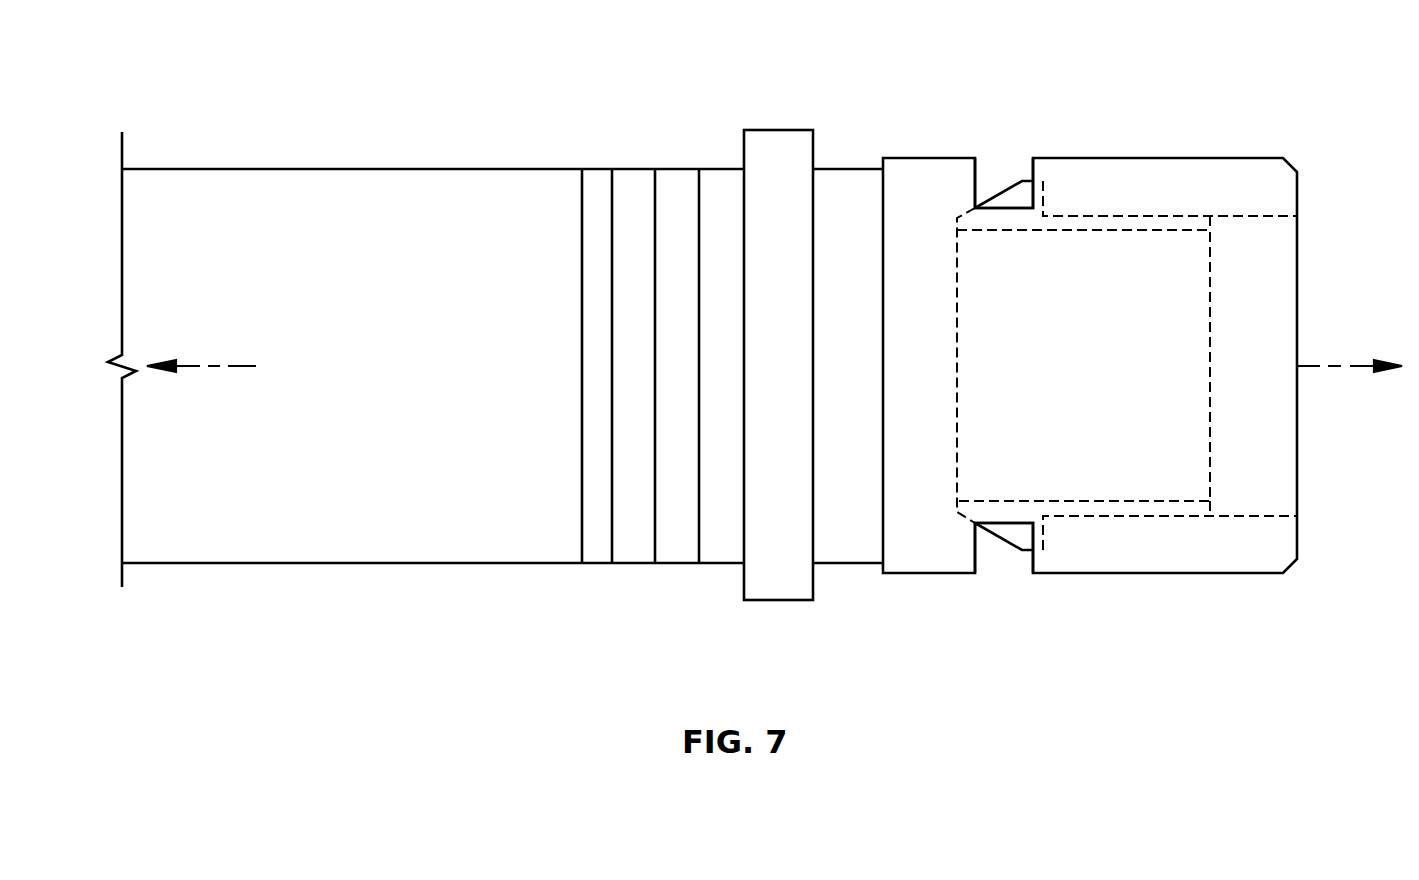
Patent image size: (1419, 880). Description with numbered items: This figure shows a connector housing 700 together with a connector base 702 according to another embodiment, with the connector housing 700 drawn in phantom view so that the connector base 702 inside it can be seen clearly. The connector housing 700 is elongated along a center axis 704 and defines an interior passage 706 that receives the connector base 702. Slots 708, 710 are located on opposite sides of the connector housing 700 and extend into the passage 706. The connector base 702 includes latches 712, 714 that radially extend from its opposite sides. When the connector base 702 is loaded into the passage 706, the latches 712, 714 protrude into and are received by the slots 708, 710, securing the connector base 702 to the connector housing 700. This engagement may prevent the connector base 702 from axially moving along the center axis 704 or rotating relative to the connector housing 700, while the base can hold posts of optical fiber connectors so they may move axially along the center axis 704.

The connector housing 700 is at (367, 168).
The connector base 702 is at (1167, 223).
The center axis 704 is at (1367, 369).
The interior passage 706 is at (1303, 260).
The slot 708 is at (1033, 150).
The slot 710 is at (1033, 585).
The latch 712 is at (1003, 543).
The latch 714 is at (1003, 193).